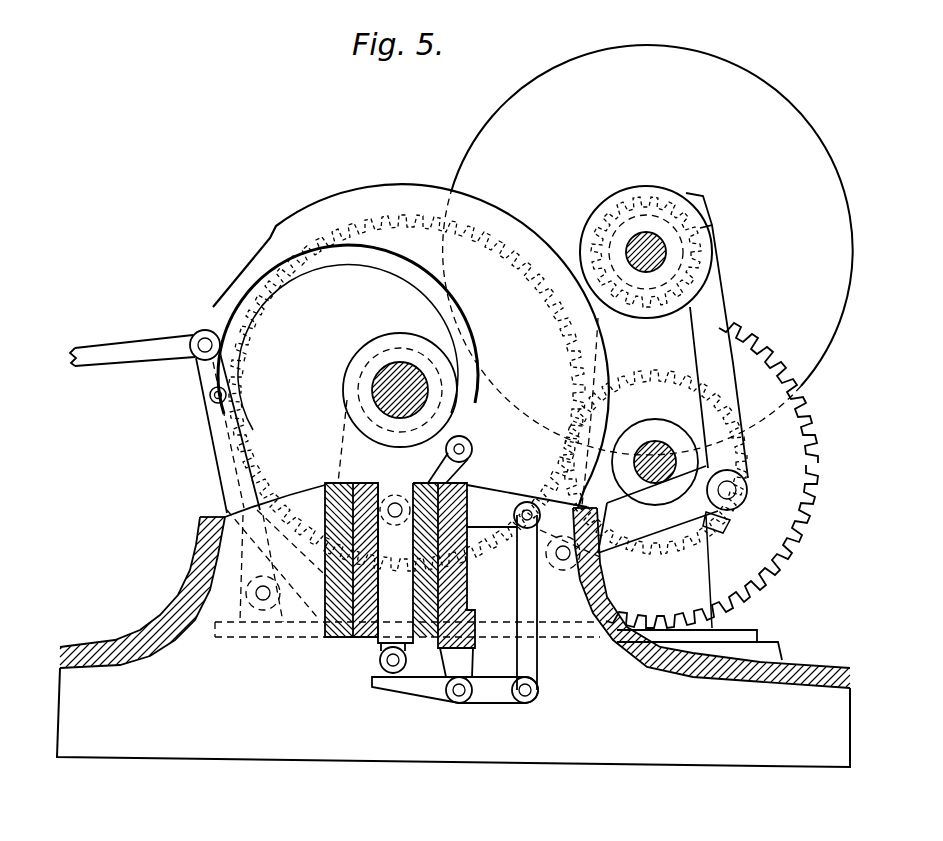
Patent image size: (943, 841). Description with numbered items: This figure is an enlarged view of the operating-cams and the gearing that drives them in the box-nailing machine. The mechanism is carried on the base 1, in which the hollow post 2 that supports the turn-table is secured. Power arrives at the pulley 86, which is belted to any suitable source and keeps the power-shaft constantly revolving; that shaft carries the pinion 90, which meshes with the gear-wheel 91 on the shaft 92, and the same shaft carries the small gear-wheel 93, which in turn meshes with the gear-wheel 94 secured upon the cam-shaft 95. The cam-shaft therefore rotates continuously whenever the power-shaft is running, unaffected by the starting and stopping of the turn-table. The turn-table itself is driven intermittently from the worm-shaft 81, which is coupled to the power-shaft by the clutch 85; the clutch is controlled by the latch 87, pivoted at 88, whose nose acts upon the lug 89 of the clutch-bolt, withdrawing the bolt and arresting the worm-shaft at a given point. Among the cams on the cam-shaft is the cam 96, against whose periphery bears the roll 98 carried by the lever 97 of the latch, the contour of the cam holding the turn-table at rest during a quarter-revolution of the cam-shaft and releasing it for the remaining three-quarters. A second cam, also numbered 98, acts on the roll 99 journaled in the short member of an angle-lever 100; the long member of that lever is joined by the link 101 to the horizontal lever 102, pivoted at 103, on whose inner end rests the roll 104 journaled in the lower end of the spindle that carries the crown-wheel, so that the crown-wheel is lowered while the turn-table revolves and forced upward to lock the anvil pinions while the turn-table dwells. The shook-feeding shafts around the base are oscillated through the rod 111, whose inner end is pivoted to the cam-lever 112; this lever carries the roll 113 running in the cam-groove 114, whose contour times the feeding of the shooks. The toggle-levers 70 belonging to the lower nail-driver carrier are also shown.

The base 1 is at (453, 717).
The hollow post 2 is at (355, 638).
The toggle-levers 70 is at (395, 563).
The shaft 81 is at (633, 238).
The clutch 85 is at (708, 257).
The pulley 86 is at (648, 250).
The latch 87 is at (722, 283).
The pivot 88 is at (729, 493).
The lug 89 is at (713, 218).
The pinion 90 is at (647, 203).
The gear-wheel 91 is at (802, 465).
The shaft 92 is at (633, 497).
The small gear-wheel 93 is at (720, 525).
The gear-wheel 94 is at (542, 308).
The cam-shaft 95 is at (386, 388).
The cam 96 is at (345, 202).
The lever 97 is at (658, 509).
The roll 98 is at (387, 342).
The roll 99 is at (445, 478).
The connecting rod 100 is at (432, 464).
The link 101 is at (517, 602).
The horizontal lever 102 is at (497, 699).
The pivot 103 is at (457, 699).
The roll 104 is at (378, 667).
The rod 111 is at (127, 350).
The cam-lever 112 is at (227, 487).
The roll 113 is at (228, 390).
The cam-groove 114 is at (245, 322).